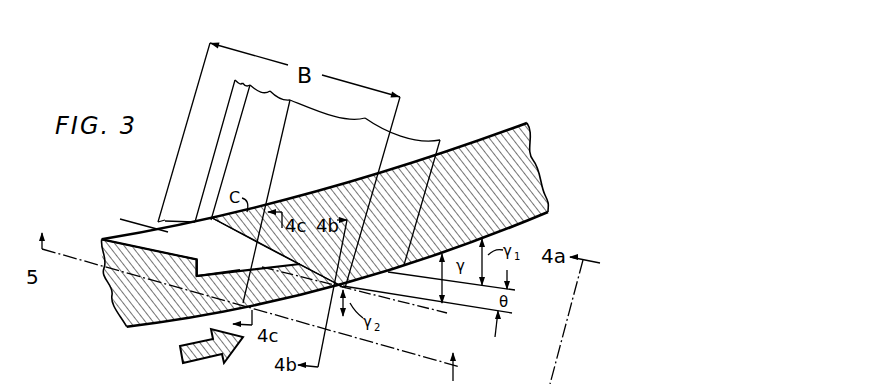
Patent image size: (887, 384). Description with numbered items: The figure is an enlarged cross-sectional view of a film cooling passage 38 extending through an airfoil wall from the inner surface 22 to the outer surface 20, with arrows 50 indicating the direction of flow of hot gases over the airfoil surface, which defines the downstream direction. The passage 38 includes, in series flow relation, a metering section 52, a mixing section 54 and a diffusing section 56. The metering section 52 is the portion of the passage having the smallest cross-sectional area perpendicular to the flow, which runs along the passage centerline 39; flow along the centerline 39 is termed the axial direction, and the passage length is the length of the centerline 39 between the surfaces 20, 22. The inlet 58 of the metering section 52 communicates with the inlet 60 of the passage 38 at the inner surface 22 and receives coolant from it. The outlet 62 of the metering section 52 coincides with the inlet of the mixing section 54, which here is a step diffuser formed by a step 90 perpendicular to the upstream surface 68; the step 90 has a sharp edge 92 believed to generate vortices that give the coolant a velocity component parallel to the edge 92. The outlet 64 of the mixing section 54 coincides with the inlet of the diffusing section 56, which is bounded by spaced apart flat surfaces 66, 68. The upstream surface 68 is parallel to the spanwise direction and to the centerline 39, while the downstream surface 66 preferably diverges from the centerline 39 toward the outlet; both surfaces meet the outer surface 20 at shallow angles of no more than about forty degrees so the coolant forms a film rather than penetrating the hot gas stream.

The outer surface 20 is at (147, 328).
The inner surface 22 is at (107, 237).
The passage 38 is at (348, 290).
The passage centerline 39 is at (447, 318).
The arrows 50 is at (213, 361).
The metering section 52 is at (225, 142).
The mixing section 54 is at (266, 188).
The diffusing section 56 is at (365, 181).
The inlet to the metering section 58 is at (198, 235).
The inlet to the passage 60 is at (165, 220).
The outlet of the metering section 62 is at (202, 243).
The outlet of the mixing section 64 is at (242, 251).
The downstream surface 66 is at (453, 276).
The upstream surface 68 is at (268, 300).
The step 90 is at (218, 272).
The sharp corner or edge 92 is at (212, 262).